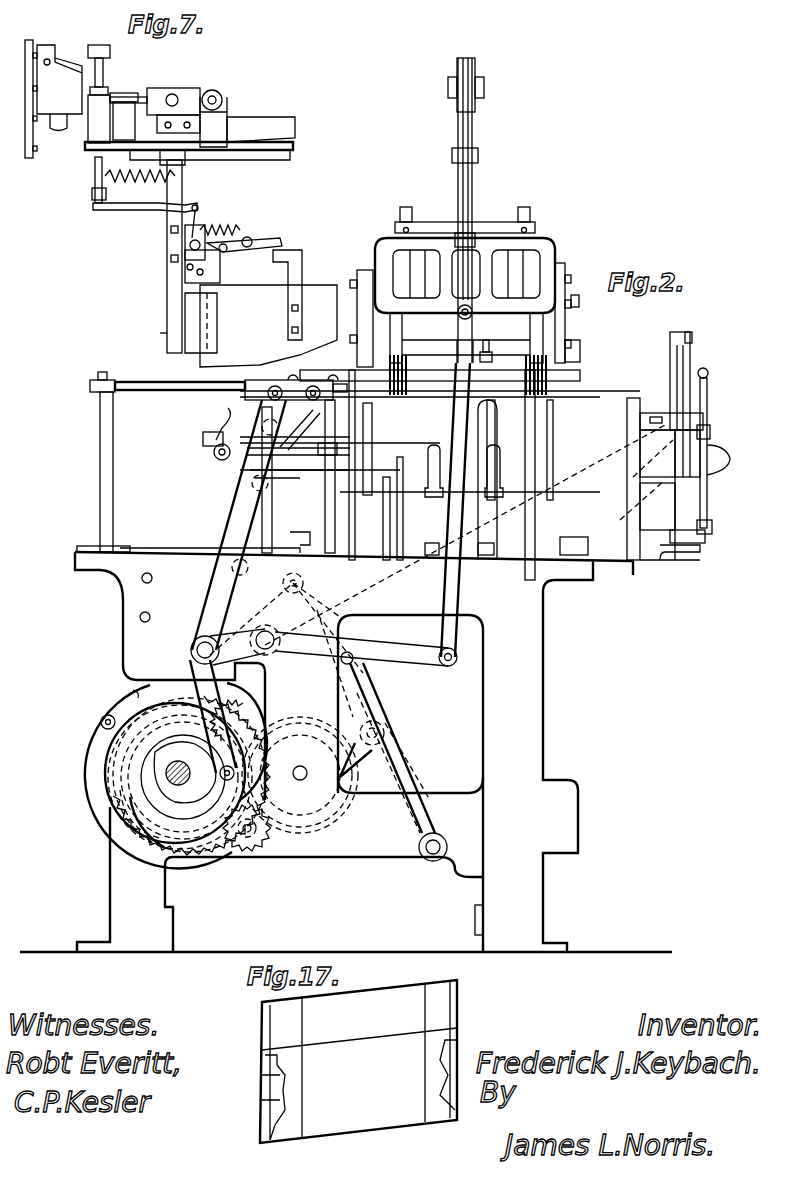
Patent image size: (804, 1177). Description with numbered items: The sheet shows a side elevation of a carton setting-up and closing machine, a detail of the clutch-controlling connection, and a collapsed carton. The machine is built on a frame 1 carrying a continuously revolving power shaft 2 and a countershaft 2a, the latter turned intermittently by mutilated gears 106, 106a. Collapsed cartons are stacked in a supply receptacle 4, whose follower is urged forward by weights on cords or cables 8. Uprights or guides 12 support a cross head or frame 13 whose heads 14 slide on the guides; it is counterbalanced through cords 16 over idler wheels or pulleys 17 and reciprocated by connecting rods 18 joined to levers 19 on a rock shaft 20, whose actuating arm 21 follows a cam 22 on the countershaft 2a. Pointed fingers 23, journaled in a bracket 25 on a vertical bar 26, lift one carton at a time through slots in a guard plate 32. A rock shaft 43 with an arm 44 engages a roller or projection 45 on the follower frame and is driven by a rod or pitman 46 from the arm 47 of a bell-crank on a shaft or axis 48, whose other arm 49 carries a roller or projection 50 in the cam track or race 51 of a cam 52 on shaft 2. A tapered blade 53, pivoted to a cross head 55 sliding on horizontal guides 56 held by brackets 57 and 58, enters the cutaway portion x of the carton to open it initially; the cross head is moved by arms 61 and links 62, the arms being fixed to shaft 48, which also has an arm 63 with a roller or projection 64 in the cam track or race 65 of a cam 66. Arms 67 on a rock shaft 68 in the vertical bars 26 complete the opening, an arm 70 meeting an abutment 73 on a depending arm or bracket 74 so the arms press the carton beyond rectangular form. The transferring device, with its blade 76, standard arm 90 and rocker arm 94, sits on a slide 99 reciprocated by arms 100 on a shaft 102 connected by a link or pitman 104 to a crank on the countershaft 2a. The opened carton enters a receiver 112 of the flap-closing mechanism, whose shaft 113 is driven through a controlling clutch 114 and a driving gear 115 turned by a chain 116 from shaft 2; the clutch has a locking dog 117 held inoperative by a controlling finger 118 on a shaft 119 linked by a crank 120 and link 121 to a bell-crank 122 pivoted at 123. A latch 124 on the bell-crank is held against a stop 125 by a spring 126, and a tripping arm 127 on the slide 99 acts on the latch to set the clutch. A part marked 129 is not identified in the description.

In FIG. 7, the frame 1 is at (167, 333).
In FIG. 2, the frame 1 is at (120, 607).
In FIG. 2, the power shaft 2 is at (166, 773).
In FIG. 2, the countershaft 2a is at (332, 832).
In FIG. 2, the carton supply receptacle 4 is at (428, 512).
In FIG. 2, the cords or cables 8 is at (478, 440).
In FIG. 2, the uprights or guides 12 is at (474, 190).
In FIG. 2, the cross head or frame 13 is at (566, 268).
In FIG. 2, the heads 14 is at (546, 243).
In FIG. 2, the cords 16 is at (462, 58).
In FIG. 2, the idler wheels or pulleys 17 is at (475, 68).
In FIG. 2, the connecting rods 18 is at (455, 600).
In FIG. 2, the levers 19 is at (366, 649).
In FIG. 2, the rock shaft 20 is at (266, 630).
In FIG. 2, the actuating arm 21 is at (360, 727).
In FIG. 2, the cam 22 is at (330, 840).
In FIG. 2, the fingers 23 is at (420, 297).
In FIG. 2, the bracket 25 is at (580, 303).
In FIG. 2, the vertical bar 26 is at (582, 338).
In FIG. 2, the guard plate 32 is at (490, 222).
In FIG. 2, the rock shaft 43 is at (485, 370).
In FIG. 2, the arm 44 is at (402, 372).
In FIG. 2, the roller or projection 45 is at (322, 437).
In FIG. 2, the rod or pitman 46 is at (304, 586).
In FIG. 2, the arm 47 is at (237, 647).
In FIG. 2, the shaft or axis 48 is at (198, 642).
In FIG. 2, the arm 49 is at (219, 727).
In FIG. 2, the roller or projection 50 is at (185, 772).
In FIG. 2, the cam track or race 51 is at (165, 822).
In FIG. 2, the cam 52 is at (130, 815).
In FIG. 2, the blade 53 is at (430, 478).
In FIG. 2, the cross head 55 is at (258, 385).
In FIG. 2, the horizontal guides 56 is at (168, 391).
In FIG. 2, the bracket 57 is at (100, 450).
In FIG. 2, the bracket 58 is at (480, 548).
In FIG. 2, the arms 61 is at (238, 517).
In FIG. 2, the links 62 is at (300, 382).
In FIG. 2, the arm 63 is at (137, 692).
In FIG. 2, the roller or projection 64 is at (100, 722).
In FIG. 2, the cam track or race 65 is at (88, 748).
In FIG. 2, the cam 66 is at (80, 770).
In FIG. 2, the arms 67 is at (446, 452).
In FIG. 2, the rock shaft 68 is at (495, 498).
In FIG. 2, the arm 70 is at (578, 468).
In FIG. 2, the abutment 73 is at (586, 492).
In FIG. 2, the depending arm or bracket 74 is at (556, 452).
In FIG. 2, the blade 76 is at (305, 480).
In FIG. 2, the arm 90 is at (222, 462).
In FIG. 2, the arm 94 is at (216, 427).
In FIG. 7, the slide 99 is at (261, 326).
In FIG. 2, the slide 99 is at (197, 550).
In FIG. 2, the arms 100 is at (400, 748).
In FIG. 2, the shaft 102 is at (445, 845).
In FIG. 2, the link or pitman 104 is at (350, 750).
In FIG. 2, the mutilated gear 106 is at (205, 855).
In FIG. 2, the mutilated gear 106a is at (300, 812).
In FIG. 2, the receiver 112 is at (650, 440).
In FIG. 7, the shaft 113 is at (147, 98).
In FIG. 7, the controlling clutch 114 is at (59, 88).
In FIG. 7, the driving gear 115 is at (29, 42).
In FIG. 2, the chain 116 is at (477, 620).
In FIG. 7, the locking dog 117 is at (66, 60).
In FIG. 7, the controlling finger 118 is at (98, 46).
In FIG. 7, the shaft 119 is at (107, 92).
In FIG. 2, the shaft 119 is at (625, 522).
In FIG. 7, the crank 120 is at (93, 196).
In FIG. 7, the link 121 is at (130, 208).
In FIG. 7, the bell-crank 122 is at (188, 232).
In FIG. 7, the pivot 123 is at (190, 245).
In FIG. 7, the latch 124 is at (268, 240).
In FIG. 7, the stop 125 is at (250, 237).
In FIG. 7, the spring 126 is at (215, 228).
In FIG. 7, the tripping arm 127 is at (295, 275).
In FIG. 2, the tripping arm 127 is at (300, 533).
In FIG. 2, the rod 129 is at (258, 490).
In FIG. 17, the cutaway portion x is at (265, 1068).